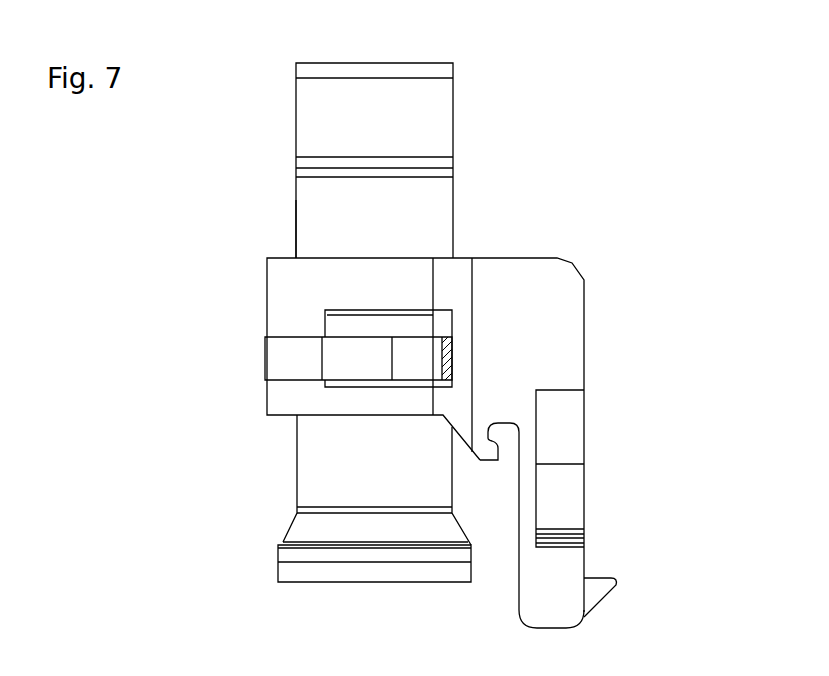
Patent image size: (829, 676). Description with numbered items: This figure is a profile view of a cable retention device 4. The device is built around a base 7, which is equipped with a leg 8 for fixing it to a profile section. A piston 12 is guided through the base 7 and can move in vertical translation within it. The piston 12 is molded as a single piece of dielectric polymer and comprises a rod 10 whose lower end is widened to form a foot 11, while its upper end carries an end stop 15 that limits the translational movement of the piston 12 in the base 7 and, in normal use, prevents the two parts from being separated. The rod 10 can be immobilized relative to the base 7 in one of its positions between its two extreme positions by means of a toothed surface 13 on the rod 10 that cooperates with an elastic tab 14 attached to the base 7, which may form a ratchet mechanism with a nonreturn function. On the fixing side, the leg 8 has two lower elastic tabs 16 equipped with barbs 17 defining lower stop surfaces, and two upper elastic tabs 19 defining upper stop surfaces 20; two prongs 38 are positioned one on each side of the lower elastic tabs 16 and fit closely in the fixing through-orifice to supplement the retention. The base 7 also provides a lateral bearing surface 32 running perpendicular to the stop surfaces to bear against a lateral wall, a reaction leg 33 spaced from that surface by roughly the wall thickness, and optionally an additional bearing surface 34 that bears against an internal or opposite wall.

The cable retention device 4 is at (530, 188).
The base 7 is at (495, 273).
The leg 8 is at (588, 440).
The rod 10 is at (295, 193).
The foot 11 is at (285, 570).
The piston 12 is at (296, 235).
The toothed surface 13 is at (435, 202).
The elastic tab 14 is at (298, 347).
The end stop 15 is at (442, 115).
The lower elastic tabs 16 is at (588, 610).
The barbs 17 is at (598, 588).
The upper elastic tabs 19 is at (568, 498).
The upper stop surfaces 20 is at (557, 550).
The lateral bearing surface 32 is at (512, 467).
The reaction leg 33 is at (484, 465).
The additional bearing surface 34 is at (262, 295).
The prongs 38 is at (540, 590).